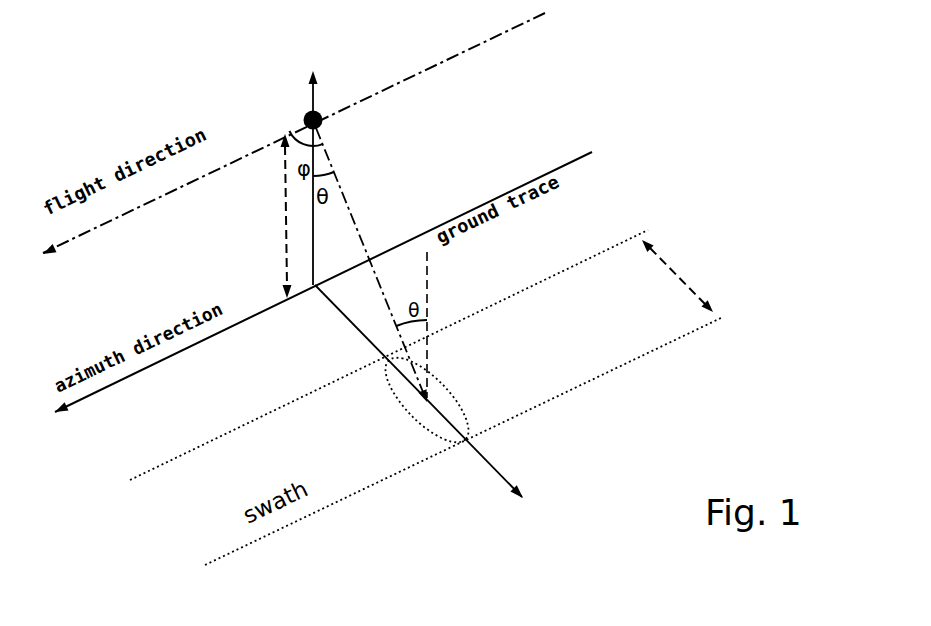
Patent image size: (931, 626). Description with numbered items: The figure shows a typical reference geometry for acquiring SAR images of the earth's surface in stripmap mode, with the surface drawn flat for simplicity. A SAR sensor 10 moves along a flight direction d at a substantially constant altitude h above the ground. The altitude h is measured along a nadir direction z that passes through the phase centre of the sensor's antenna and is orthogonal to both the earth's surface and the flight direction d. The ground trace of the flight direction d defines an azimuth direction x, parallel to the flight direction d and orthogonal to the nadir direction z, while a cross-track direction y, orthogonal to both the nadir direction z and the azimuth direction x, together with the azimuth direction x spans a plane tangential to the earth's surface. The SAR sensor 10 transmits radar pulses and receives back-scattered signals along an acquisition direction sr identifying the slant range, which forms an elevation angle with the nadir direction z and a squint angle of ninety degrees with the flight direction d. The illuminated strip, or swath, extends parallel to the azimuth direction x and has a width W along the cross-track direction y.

The SAR sensor 10 is at (324, 123).
The altitude h is at (276, 216).
The width W is at (677, 276).
The acquisition direction sr is at (371, 265).
The azimuth direction x is at (323, 294).
The cross-track direction y is at (419, 398).
The nadir direction z is at (303, 175).
The flight direction d is at (294, 143).